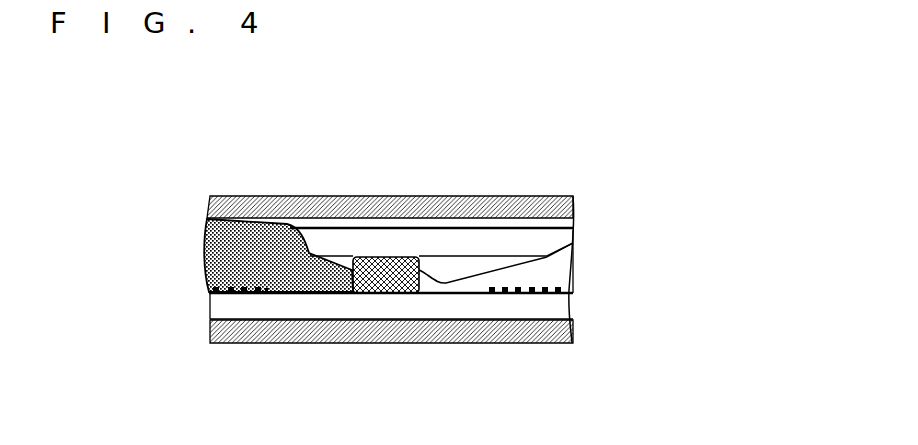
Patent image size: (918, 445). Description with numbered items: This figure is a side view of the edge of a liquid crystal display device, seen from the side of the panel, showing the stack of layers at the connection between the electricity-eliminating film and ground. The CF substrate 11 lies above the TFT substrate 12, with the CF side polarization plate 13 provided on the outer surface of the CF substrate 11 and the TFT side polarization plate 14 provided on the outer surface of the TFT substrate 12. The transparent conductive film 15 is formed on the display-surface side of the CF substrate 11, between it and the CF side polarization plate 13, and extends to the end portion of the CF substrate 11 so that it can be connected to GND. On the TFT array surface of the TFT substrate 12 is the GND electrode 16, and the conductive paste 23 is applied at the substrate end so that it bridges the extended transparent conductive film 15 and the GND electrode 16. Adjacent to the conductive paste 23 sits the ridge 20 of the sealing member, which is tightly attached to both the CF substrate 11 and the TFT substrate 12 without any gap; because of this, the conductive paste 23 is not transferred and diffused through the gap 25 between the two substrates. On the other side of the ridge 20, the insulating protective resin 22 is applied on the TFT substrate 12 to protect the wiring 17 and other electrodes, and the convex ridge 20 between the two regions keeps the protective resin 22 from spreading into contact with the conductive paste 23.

The CF substrate 11 is at (338, 235).
The TFT substrate 12 is at (330, 308).
The CF side polarization plate 13 is at (487, 197).
The TFT side polarization plate 14 is at (477, 345).
The transparent conductive film 15 is at (572, 223).
The GND electrode 16 is at (237, 294).
The wiring 17 is at (570, 286).
The ridge 20 is at (385, 288).
The protective resin 22 is at (563, 268).
The conductive paste 23 is at (198, 233).
The gap 25 is at (443, 265).